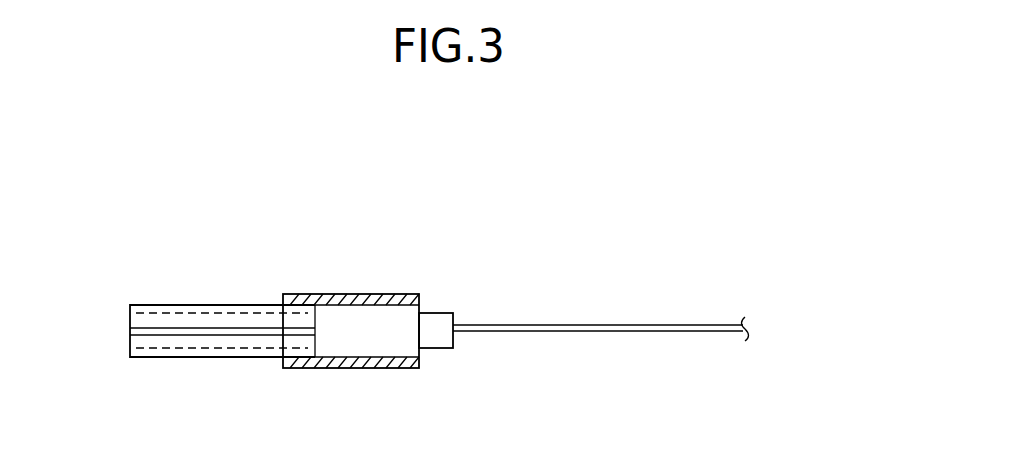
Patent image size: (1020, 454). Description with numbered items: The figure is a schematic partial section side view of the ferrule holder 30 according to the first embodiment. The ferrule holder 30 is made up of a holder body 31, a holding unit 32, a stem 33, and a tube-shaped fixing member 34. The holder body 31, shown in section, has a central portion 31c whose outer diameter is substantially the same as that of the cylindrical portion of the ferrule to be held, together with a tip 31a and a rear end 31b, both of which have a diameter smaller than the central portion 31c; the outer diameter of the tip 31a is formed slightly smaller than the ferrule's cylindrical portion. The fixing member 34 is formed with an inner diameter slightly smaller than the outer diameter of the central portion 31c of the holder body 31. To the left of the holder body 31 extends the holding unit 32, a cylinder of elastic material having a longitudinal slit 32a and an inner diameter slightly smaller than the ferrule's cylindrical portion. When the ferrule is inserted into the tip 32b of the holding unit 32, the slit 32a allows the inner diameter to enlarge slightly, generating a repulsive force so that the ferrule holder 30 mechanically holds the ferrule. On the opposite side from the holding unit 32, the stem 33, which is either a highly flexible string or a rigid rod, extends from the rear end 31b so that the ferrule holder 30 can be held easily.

The ferrule holder 30 is at (532, 180).
The holder body 31 is at (380, 294).
The tip 31a is at (296, 330).
The rear end 31b is at (432, 323).
The central portion 31c is at (342, 321).
The holding unit 32 is at (238, 357).
The slit 32a is at (175, 333).
The tip of the holding unit 32b is at (130, 318).
The stem 33 is at (588, 324).
The fixing member 34 is at (388, 364).